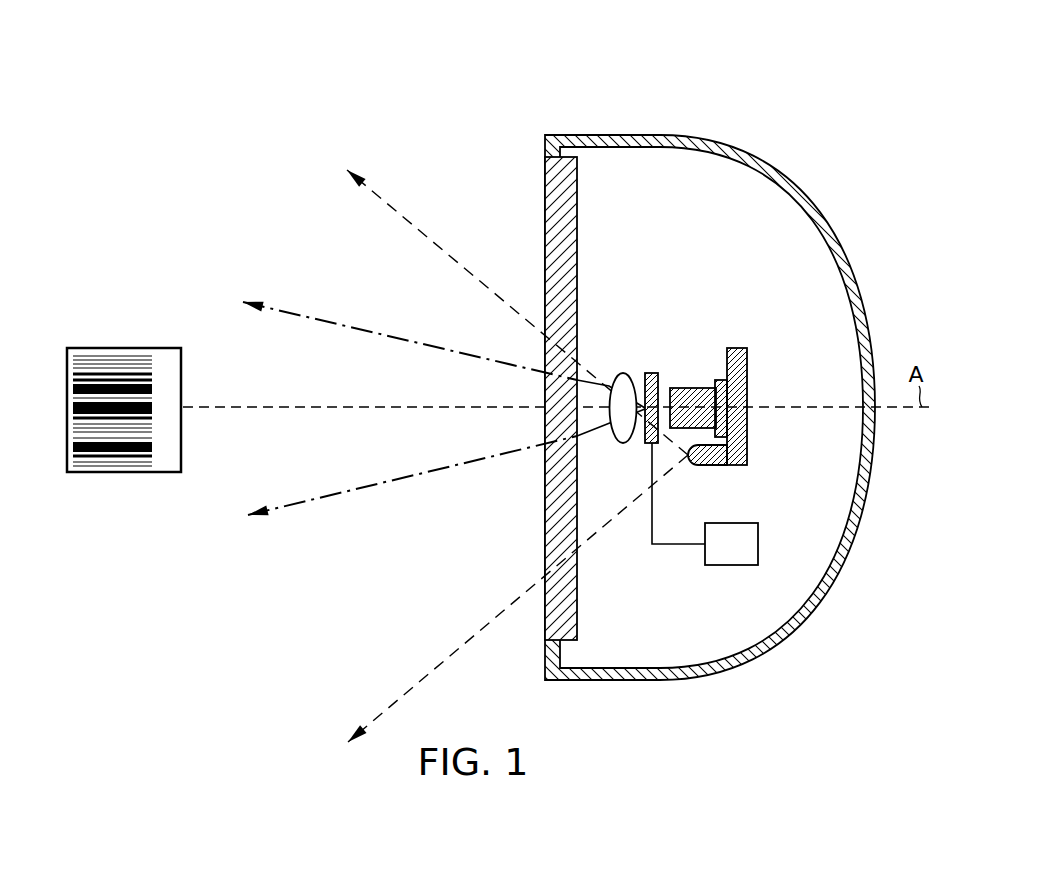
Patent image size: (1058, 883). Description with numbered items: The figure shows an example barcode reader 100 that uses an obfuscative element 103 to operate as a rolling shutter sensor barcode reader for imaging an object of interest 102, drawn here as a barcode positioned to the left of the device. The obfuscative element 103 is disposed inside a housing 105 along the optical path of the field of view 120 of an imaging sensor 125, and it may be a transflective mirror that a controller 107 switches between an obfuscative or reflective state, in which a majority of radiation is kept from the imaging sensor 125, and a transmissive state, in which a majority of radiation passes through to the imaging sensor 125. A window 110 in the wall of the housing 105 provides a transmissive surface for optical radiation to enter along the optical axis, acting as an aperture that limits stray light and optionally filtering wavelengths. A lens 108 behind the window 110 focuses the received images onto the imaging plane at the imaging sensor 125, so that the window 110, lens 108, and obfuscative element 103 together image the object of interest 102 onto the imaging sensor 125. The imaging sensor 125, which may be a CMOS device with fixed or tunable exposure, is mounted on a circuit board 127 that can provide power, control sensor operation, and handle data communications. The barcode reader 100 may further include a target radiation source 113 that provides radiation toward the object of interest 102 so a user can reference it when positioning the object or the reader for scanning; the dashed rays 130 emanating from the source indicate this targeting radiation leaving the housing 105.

The barcode reader 100 is at (814, 60).
The object of interest 102 is at (121, 348).
The obfuscative element 103 is at (648, 373).
The housing 105 is at (597, 135).
The controller 107 is at (732, 566).
The lens 108 is at (612, 436).
The window 110 is at (545, 184).
The target radiation source 113 is at (710, 466).
The field of view 120 is at (273, 305).
The imaging sensor 125 is at (722, 380).
The circuit board 127 is at (747, 463).
The illumination rays 130 is at (368, 186).